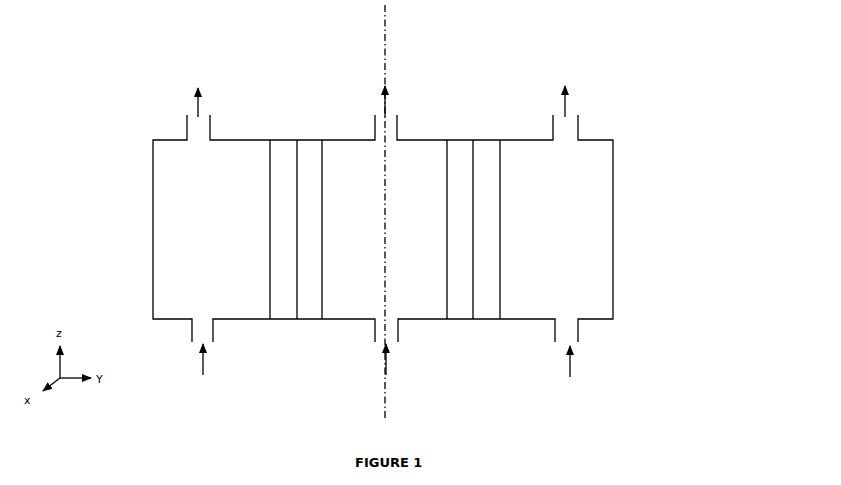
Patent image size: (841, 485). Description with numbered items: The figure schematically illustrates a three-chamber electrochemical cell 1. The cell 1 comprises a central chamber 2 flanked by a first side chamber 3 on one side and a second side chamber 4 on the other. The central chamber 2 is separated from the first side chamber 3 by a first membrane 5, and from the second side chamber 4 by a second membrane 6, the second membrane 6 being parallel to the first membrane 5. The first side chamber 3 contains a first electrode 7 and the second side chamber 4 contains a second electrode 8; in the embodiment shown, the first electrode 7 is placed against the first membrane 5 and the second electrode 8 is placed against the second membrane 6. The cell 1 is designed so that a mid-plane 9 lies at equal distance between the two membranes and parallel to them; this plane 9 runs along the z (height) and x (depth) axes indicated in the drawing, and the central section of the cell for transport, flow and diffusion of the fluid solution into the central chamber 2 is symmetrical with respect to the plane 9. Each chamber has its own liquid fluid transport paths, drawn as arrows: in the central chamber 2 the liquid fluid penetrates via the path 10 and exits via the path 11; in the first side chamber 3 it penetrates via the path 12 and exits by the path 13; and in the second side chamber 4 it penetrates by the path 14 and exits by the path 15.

The cell 1 is at (404, 212).
The central chamber 2 is at (360, 277).
The first side chamber 3 is at (175, 252).
The second side chamber 4 is at (575, 250).
The first membrane 5 is at (310, 165).
The second membrane 6 is at (460, 165).
The first electrode 7 is at (286, 165).
The second electrode 8 is at (488, 165).
The mid-plane 9 is at (392, 212).
The path 10 is at (398, 361).
The path 11 is at (397, 101).
The path 12 is at (203, 370).
The path 13 is at (199, 92).
The path 14 is at (570, 371).
The path 15 is at (565, 92).